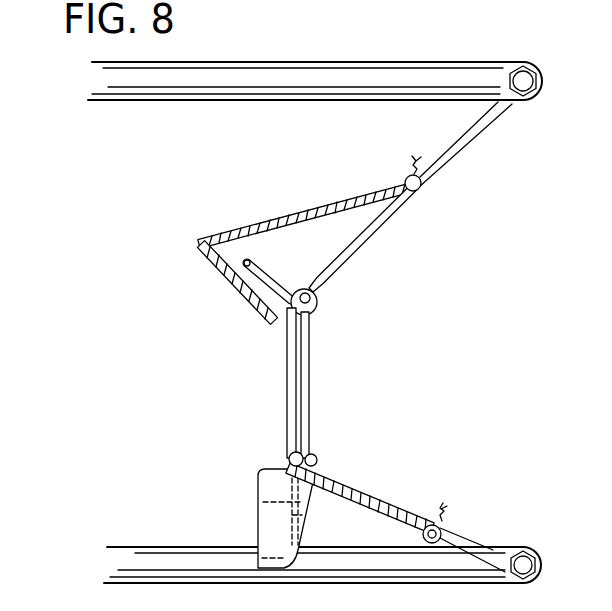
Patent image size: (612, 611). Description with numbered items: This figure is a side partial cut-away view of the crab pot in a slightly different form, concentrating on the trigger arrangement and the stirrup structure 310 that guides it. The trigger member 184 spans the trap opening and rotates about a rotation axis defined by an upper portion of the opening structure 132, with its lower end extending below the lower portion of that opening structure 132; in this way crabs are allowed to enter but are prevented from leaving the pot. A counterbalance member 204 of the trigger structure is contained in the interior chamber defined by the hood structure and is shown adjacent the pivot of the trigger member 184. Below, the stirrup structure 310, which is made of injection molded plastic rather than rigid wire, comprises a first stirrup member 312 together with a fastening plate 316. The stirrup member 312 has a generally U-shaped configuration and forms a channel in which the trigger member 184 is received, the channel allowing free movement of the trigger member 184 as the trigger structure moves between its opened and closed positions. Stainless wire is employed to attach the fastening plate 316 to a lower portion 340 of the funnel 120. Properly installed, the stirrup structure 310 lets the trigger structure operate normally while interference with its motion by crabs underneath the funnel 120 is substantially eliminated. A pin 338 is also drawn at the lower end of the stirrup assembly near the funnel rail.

The funnel 120 is at (438, 143).
The counterbalance member 204 is at (244, 287).
The trigger member 184 is at (287, 367).
The opening structure 132 is at (310, 367).
The first stirrup member 312 is at (258, 478).
The stirrup structure 310 is at (343, 497).
The fastening plate 316 is at (359, 494).
The lower portion of the funnel 340 is at (379, 494).
The pin 338 is at (446, 523).